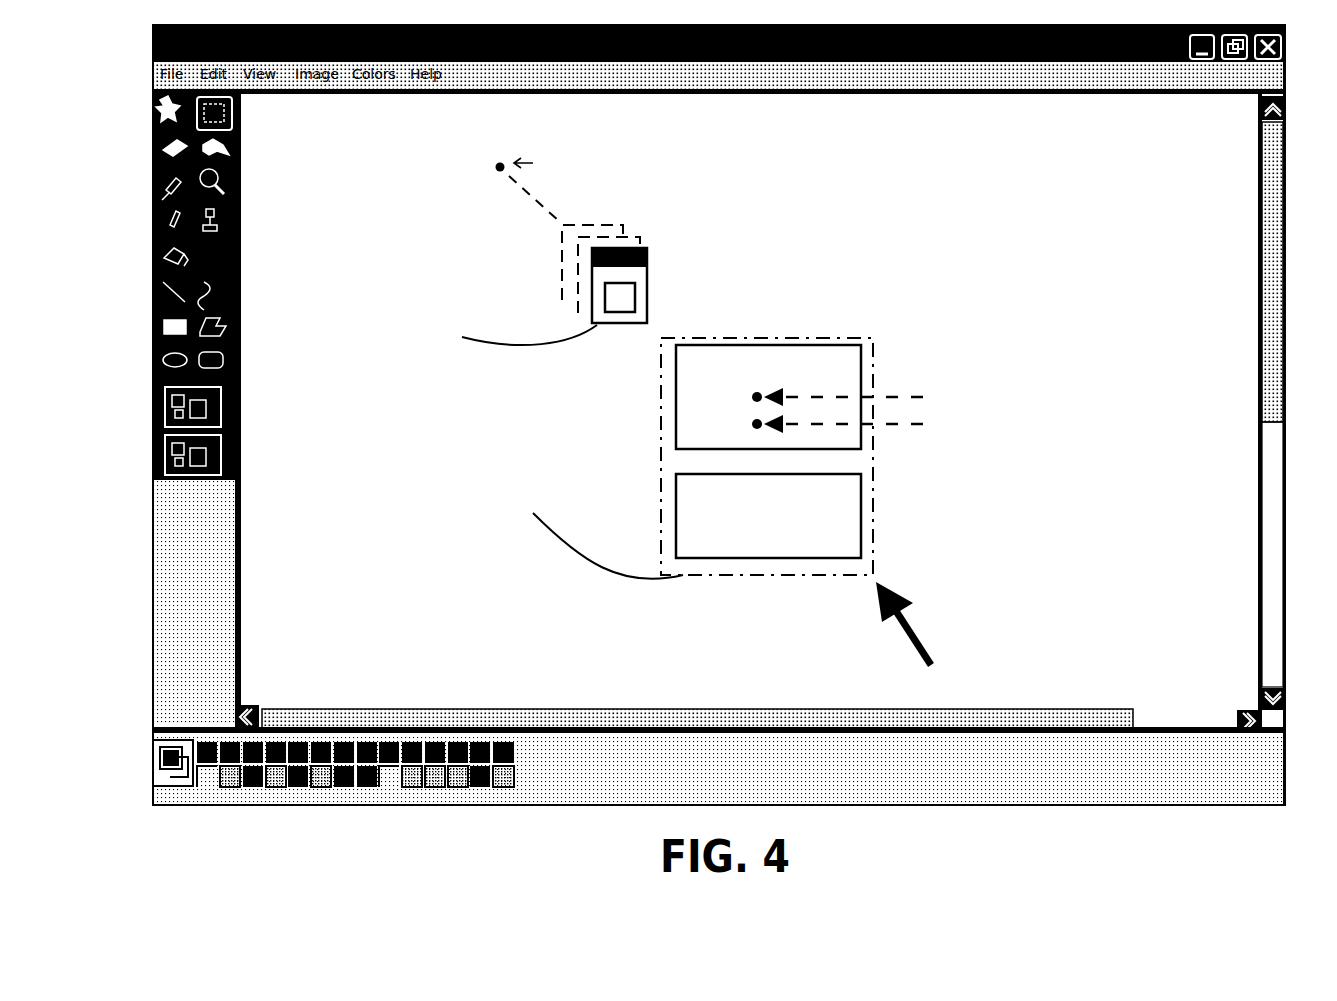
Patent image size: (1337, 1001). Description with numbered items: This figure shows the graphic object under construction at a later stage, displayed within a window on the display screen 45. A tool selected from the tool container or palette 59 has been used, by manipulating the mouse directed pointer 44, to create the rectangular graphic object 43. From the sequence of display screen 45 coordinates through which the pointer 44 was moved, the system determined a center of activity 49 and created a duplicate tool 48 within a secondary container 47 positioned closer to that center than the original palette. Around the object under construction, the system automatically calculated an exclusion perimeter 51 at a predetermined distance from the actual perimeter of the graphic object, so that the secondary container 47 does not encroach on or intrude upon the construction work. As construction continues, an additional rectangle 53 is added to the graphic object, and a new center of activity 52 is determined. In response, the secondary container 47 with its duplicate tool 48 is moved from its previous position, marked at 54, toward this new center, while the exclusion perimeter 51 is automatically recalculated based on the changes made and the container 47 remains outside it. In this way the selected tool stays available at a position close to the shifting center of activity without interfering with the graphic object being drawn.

The graphic object 43 is at (862, 352).
The mouse directed pointer 44 is at (912, 632).
The display screen 45 is at (478, 585).
The secondary container 47 is at (612, 326).
The duplicate tool 48 is at (620, 296).
The center of activity 49 is at (757, 393).
The exclusion perimeter 51 is at (838, 577).
The new center of activity 52 is at (755, 425).
The additional rectangle 53 is at (861, 501).
The previous position of palette tool 54 is at (500, 164).
The tool container 59 is at (197, 531).